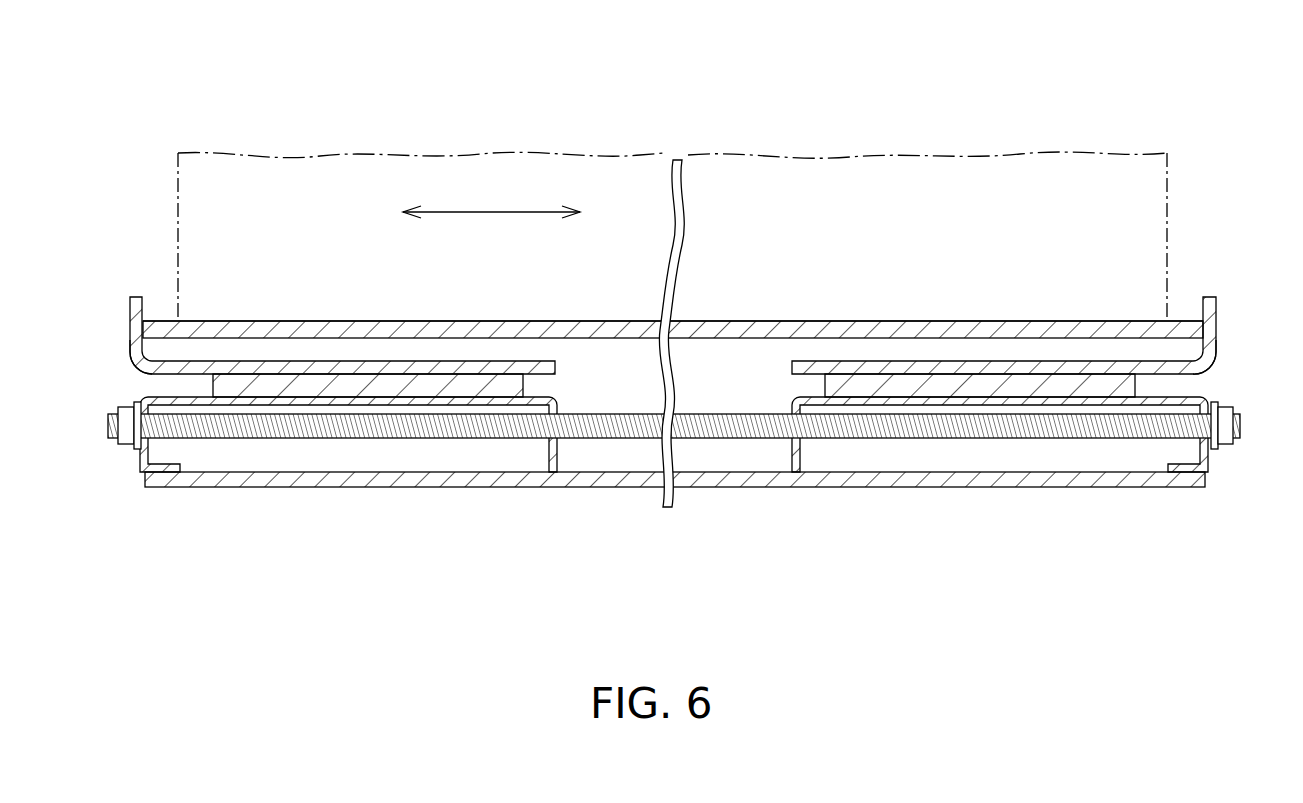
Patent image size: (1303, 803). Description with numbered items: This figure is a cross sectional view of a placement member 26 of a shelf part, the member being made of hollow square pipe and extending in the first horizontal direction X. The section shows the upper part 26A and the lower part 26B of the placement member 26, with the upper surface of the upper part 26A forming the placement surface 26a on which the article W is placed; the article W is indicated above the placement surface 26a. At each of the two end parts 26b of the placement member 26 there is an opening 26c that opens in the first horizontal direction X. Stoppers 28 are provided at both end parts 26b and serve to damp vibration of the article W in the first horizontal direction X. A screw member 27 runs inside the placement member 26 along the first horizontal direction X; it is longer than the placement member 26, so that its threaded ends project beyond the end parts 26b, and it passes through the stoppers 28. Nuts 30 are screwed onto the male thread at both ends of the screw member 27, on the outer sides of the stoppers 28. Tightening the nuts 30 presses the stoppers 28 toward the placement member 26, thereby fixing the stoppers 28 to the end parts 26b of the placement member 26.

The placement member 26 is at (683, 376).
The upper part 26A is at (468, 320).
The lower part 26B is at (431, 488).
The placement surface 26a is at (775, 321).
The end parts 26b is at (160, 330).
The openings 26c is at (115, 339).
The screw member 27 is at (734, 450).
The stoppers 28 is at (318, 358).
The nuts 30 is at (124, 407).
The article W is at (731, 150).
The first horizontal direction X is at (491, 196).